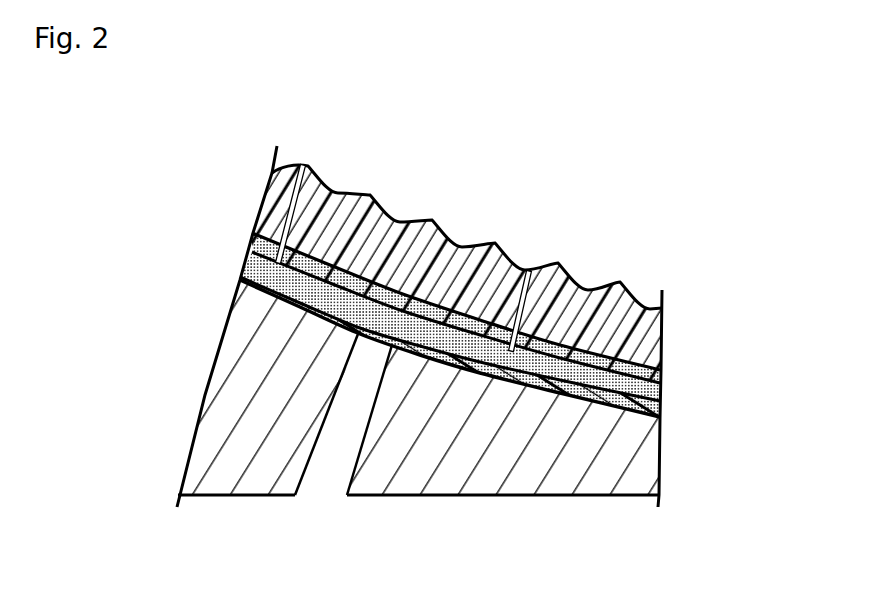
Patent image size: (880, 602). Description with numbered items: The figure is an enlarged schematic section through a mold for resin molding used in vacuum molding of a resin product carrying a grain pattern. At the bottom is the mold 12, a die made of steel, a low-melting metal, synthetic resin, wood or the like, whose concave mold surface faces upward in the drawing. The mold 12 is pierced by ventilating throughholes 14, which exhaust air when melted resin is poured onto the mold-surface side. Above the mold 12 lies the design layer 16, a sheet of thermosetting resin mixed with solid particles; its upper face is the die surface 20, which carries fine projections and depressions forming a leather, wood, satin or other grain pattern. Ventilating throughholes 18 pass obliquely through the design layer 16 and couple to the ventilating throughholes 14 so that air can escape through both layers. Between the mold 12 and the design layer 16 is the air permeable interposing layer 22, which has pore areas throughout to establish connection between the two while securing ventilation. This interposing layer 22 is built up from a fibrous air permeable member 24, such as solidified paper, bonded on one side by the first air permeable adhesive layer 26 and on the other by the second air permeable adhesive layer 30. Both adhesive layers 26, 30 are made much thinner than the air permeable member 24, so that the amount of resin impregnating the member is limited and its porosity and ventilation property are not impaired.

The mold 12 is at (254, 483).
The ventilating throughholes 14 is at (332, 465).
The design layer 16 is at (618, 302).
The ventilating throughholes 18 is at (307, 192).
The die surface 20 is at (433, 218).
The air permeable interposing layer 22 is at (506, 344).
The air permeable member 24 is at (642, 393).
The first air permeable adhesive layer 26 is at (725, 325).
The second air permeable adhesive layer 30 is at (648, 372).